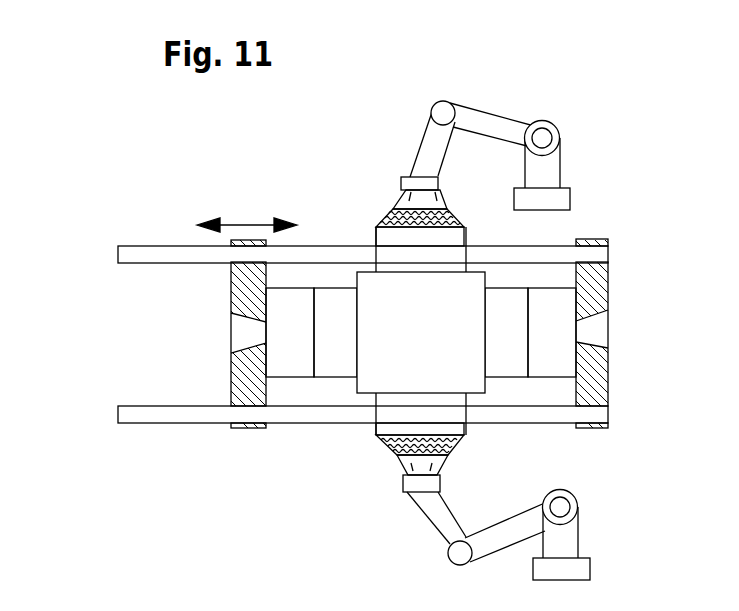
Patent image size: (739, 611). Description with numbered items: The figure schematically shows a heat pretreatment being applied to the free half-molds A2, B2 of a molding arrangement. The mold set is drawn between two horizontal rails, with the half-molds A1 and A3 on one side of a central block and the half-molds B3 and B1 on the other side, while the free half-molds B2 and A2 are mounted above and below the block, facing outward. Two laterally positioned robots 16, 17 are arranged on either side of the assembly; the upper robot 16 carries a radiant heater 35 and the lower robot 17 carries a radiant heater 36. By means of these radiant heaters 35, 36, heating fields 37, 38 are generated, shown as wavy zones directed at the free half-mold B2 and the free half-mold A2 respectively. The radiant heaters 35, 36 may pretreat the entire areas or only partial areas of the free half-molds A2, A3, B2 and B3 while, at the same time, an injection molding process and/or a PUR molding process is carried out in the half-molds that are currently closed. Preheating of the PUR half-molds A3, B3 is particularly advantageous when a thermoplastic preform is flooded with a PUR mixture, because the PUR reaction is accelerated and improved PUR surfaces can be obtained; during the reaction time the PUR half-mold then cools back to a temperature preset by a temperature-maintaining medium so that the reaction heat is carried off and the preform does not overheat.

The robot 16 is at (406, 118).
The robot 17 is at (420, 538).
The radiant heater 35 is at (406, 204).
The radiant heater 36 is at (403, 474).
The heating field 37 is at (397, 217).
The heating field 38 is at (402, 462).
The half-mold A1 is at (290, 332).
The free half-mold A2 is at (463, 432).
The PUR half-mold A3 is at (335, 332).
The half-mold B1 is at (552, 332).
The free half-mold B2 is at (388, 237).
The PUR half-mold B3 is at (506, 332).